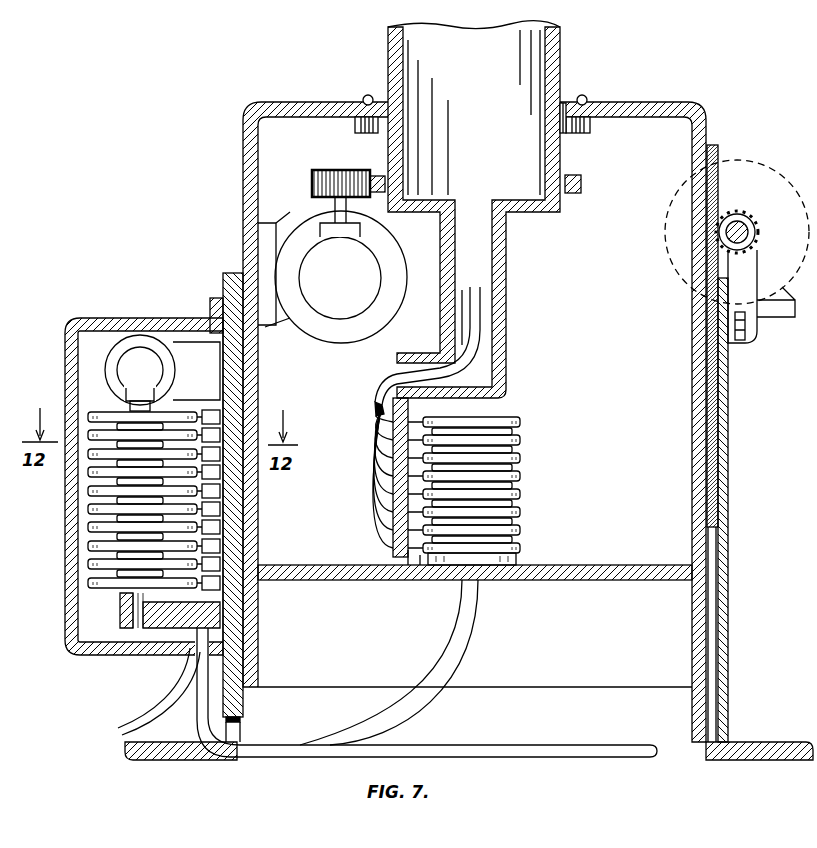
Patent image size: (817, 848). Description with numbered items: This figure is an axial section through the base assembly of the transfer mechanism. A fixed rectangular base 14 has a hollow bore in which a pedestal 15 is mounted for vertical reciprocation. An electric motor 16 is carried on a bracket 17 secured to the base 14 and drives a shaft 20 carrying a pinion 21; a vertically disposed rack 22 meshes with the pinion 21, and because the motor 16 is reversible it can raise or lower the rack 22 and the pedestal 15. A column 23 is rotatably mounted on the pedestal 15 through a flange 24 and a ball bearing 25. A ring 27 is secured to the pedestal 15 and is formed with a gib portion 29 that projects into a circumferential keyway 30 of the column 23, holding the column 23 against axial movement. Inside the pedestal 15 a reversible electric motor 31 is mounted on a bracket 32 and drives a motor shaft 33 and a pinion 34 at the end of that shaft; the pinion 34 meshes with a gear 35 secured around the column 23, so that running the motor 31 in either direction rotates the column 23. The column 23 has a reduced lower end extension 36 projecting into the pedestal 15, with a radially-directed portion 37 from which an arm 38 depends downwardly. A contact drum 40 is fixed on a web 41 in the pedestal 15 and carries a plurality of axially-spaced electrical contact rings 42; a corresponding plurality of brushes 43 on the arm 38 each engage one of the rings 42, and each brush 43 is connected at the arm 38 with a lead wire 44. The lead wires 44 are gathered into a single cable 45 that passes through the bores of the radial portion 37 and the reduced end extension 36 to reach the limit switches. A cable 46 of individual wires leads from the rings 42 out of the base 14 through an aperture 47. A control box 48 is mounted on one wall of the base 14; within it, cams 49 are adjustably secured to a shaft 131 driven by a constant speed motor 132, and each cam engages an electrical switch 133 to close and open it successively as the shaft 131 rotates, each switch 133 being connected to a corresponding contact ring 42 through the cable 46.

The base 14 is at (722, 598).
The pedestal 15 is at (247, 185).
The electric motor 16 is at (768, 178).
The bracket 17 is at (775, 317).
The shaft 20 is at (757, 229).
The pinion 21 is at (745, 219).
The rack 22 is at (716, 153).
The column 23 is at (562, 58).
The flange 24 is at (368, 95).
The ball bearing 25 is at (586, 96).
The ring 27 is at (589, 130).
The gib portion 29 is at (560, 125).
The keyway 30 is at (560, 128).
The reversible electric motor 31 is at (342, 330).
The bracket 32 is at (268, 326).
The lamp leads 33 is at (332, 205).
The pinion 34 is at (312, 183).
The gear 35 is at (582, 183).
The reduced lower end extension 36 is at (504, 297).
The radially-directed portion 37 is at (413, 355).
The arm 38 is at (408, 408).
The contact drum 40 is at (522, 558).
The web 41 is at (608, 575).
The electrical contact rings 42 is at (522, 462).
The brushes 43 is at (418, 556).
The lead wire 44 is at (376, 462).
The cable 45 is at (372, 400).
The cable 46 is at (453, 638).
The aperture 47 is at (240, 722).
The control box 48 is at (66, 604).
The cams 49 is at (88, 530).
The shaft 131 is at (128, 634).
The constant speed motor 132 is at (143, 342).
The electrical switch 133 is at (218, 509).